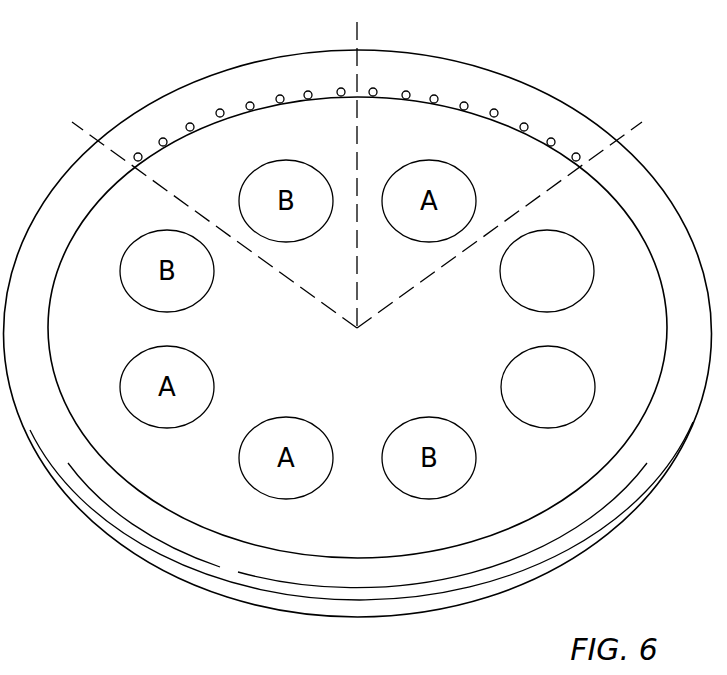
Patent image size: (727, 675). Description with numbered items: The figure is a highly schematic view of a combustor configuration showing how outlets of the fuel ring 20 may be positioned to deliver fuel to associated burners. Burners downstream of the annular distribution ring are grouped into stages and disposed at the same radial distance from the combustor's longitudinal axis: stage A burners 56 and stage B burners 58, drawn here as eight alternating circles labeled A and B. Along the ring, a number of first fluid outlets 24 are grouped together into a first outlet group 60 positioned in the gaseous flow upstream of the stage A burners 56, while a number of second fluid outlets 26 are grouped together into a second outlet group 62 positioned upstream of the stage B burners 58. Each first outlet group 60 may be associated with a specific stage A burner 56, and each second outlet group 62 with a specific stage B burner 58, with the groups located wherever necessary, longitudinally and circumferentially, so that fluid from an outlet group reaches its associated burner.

The plate 20 is at (102, 523).
The first fluid outlets 24 is at (497, 111).
The second fluid outlets 26 is at (217, 111).
The stage A burners 56 is at (517, 303).
The stage B burners 58 is at (577, 353).
The first outlet group 60 is at (556, 66).
The second outlet group 62 is at (158, 66).